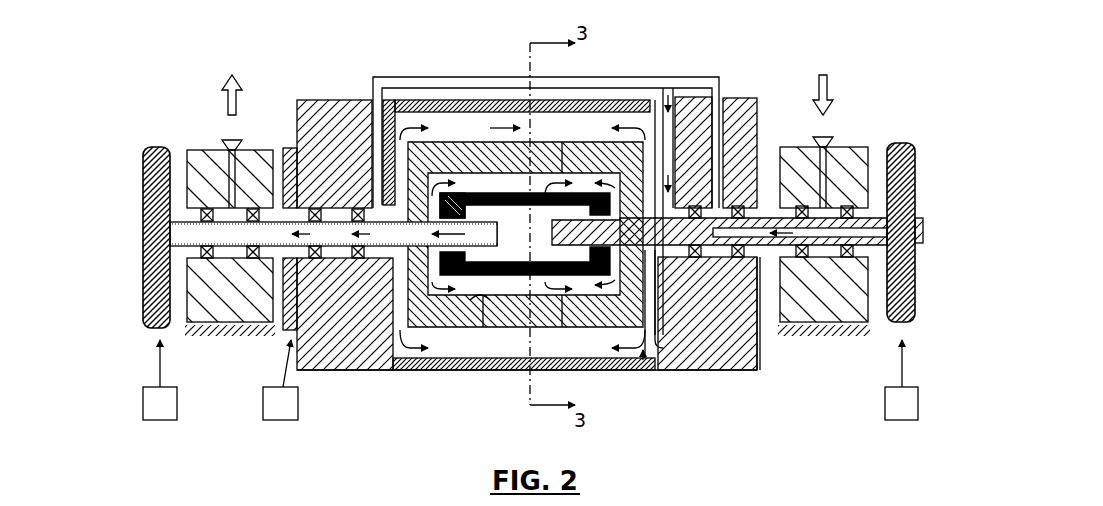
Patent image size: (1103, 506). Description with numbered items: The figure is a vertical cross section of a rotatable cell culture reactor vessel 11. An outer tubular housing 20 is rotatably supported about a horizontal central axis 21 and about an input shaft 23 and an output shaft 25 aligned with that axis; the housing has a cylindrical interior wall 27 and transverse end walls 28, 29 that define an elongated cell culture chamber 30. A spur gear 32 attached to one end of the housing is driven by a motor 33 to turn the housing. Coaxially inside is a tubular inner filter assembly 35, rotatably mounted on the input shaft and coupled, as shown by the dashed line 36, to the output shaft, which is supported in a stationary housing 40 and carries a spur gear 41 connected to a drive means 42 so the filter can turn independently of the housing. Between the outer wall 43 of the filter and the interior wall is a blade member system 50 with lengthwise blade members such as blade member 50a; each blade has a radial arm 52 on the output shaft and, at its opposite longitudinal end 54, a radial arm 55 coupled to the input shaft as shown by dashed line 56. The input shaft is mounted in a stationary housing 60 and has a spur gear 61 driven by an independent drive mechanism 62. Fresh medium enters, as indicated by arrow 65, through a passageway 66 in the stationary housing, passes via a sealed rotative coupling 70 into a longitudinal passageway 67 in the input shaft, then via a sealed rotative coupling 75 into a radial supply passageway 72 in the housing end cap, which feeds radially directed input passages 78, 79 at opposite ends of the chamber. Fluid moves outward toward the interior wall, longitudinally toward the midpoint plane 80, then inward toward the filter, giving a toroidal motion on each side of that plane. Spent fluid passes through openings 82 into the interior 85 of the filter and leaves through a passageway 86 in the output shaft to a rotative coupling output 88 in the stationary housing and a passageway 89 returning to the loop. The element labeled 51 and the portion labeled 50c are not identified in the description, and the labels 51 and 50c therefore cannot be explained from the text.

The cell culture reactor vessel 11 is at (643, 380).
The outer tubular housing 20 is at (430, 369).
The horizontal central axis 21 is at (110, 233).
The input shaft 23 is at (760, 258).
The output shaft 25 is at (282, 262).
The interior wall 27 is at (512, 347).
The transverse end wall 28 is at (402, 358).
The transverse end wall 29 is at (648, 368).
The cell culture chamber 30 is at (573, 294).
The spur gear 32 is at (289, 148).
The motor 33 is at (298, 405).
The inner filter assembly 35 is at (586, 193).
The coupling 36 is at (490, 195).
The stationary housing 40 is at (195, 150).
The spur gear 41 is at (157, 147).
The drive means 42 is at (177, 402).
The outer wall 43 is at (455, 192).
The blade member system 50 is at (632, 185).
The blade member 50a is at (562, 140).
The stator lower portion 50c is at (563, 317).
The end plate 51 is at (368, 183).
The radial arm 52 is at (395, 190).
The opposite longitudinal end 54 is at (670, 155).
The radial arm 55 is at (650, 170).
The coupling 56 is at (655, 262).
The stationary housing 60 is at (800, 160).
The spur gear 61 is at (897, 150).
The drive mechanism 62 is at (885, 402).
The arrow 65 is at (830, 78).
The passageway 66 is at (828, 162).
The longitudinal passageway 67 is at (757, 370).
The sealed rotative coupling 70 is at (832, 258).
The radial supply passageway 72 is at (738, 150).
The sealed rotative coupling 75 is at (736, 258).
The input passage 78 is at (700, 150).
The input passage 79 is at (372, 140).
The midpoint plane 80 is at (503, 105).
The openings 82 is at (488, 268).
The interior 85 is at (505, 257).
The passageway 86 is at (350, 258).
The rotative coupling output 88 is at (228, 256).
The passageway 89 is at (226, 149).